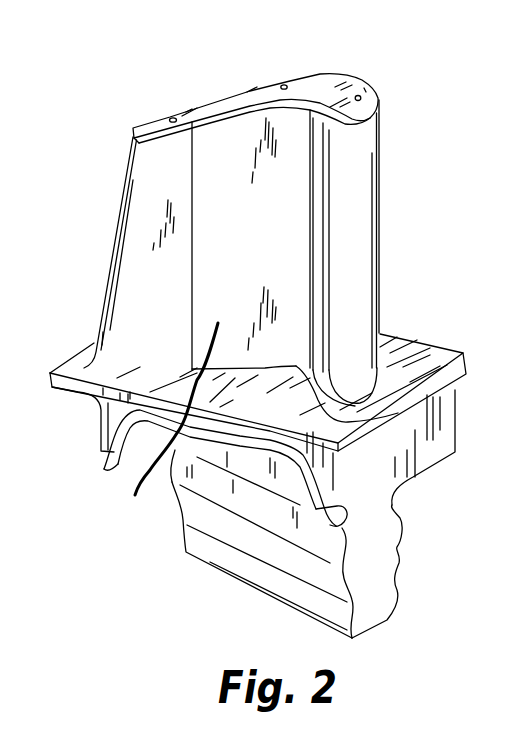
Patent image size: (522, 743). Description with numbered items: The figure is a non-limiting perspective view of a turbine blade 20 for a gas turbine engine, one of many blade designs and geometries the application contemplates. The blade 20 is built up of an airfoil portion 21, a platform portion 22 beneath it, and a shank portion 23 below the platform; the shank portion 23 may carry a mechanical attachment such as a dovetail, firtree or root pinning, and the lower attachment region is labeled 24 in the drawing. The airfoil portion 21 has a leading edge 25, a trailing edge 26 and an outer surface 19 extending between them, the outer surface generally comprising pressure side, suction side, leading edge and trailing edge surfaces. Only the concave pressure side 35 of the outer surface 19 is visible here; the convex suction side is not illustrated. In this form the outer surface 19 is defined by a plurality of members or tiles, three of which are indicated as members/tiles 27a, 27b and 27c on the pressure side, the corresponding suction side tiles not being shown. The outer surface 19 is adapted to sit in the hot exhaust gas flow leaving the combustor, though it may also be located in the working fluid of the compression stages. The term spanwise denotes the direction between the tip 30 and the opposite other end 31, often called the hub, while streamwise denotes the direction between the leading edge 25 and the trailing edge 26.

The turbine blade 20 is at (410, 99).
The outer surface 19 is at (218, 145).
The tip 30 is at (308, 82).
The pressure side 35 is at (255, 138).
The trailing edge 26 is at (125, 180).
The airfoil portion 21 is at (150, 226).
The member/tile 27a is at (123, 297).
The leading edge 25 is at (365, 225).
The member/tile 27c is at (362, 290).
The platform portion 22 is at (412, 345).
The other end 31 is at (376, 424).
The member/tile 27b is at (171, 427).
The shank portion 23 is at (370, 520).
The dovetail root 24 is at (390, 565).